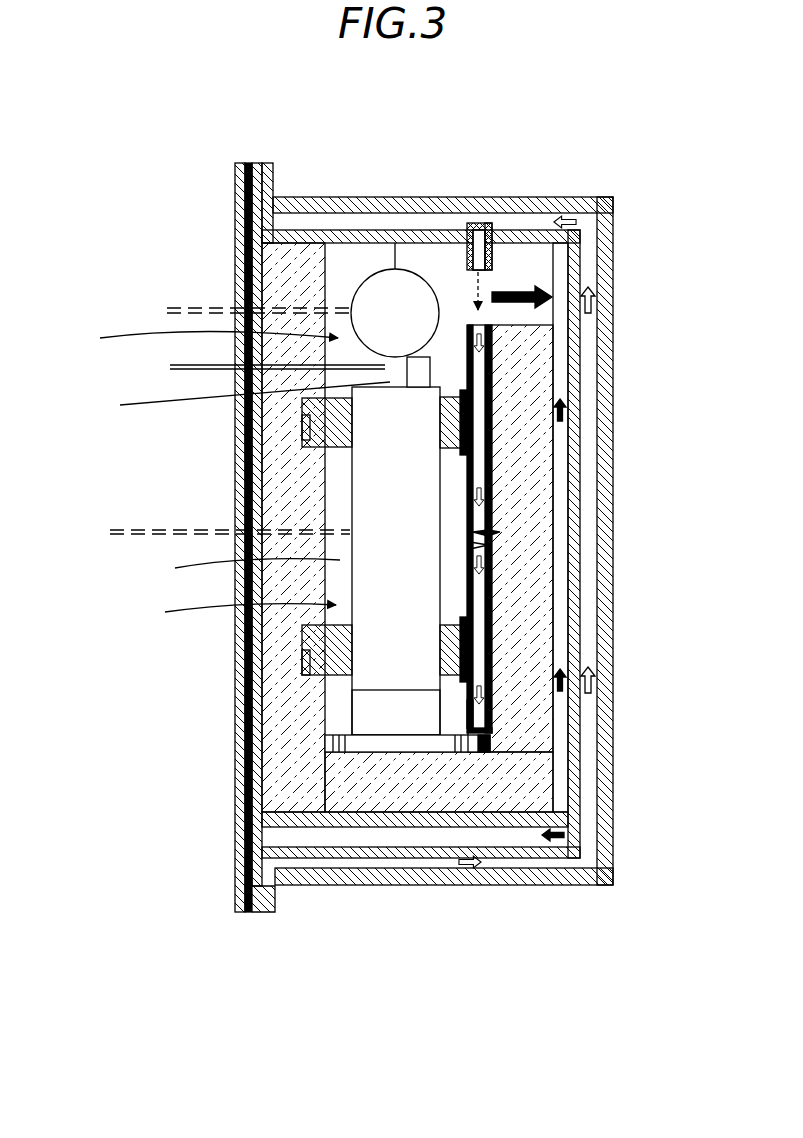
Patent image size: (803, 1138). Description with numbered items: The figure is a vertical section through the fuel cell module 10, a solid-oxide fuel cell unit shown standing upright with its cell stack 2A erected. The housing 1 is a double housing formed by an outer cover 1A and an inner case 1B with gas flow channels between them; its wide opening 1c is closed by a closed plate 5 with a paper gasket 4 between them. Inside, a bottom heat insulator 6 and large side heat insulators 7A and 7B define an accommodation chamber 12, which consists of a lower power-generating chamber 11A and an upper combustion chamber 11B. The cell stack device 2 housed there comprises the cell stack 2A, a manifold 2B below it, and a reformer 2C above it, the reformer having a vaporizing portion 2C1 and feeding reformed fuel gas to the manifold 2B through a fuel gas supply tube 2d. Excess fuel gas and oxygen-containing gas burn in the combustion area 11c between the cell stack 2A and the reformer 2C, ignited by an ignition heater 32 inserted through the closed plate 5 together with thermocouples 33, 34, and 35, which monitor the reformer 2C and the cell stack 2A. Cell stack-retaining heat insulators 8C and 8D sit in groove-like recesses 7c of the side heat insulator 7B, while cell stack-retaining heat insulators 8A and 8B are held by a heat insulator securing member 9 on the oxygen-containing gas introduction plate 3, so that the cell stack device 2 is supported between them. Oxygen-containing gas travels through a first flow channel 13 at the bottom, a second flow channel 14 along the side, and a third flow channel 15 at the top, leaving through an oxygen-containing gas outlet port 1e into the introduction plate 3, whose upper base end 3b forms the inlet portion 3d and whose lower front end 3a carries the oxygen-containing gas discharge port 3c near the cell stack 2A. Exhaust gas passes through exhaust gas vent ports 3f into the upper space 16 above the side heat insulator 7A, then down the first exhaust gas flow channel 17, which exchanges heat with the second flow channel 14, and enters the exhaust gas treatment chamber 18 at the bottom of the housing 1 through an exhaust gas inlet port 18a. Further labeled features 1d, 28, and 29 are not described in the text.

The housing 1 is at (486, 485).
The outer cover 1A is at (268, 163).
The inner case 1B is at (257, 163).
The wide opening 1c is at (285, 250).
The lower wall portion 1d is at (575, 470).
The oxygen-containing gas outlet port 1e is at (478, 240).
The cell stack device 2 is at (305, 419).
The cell stack 2A is at (396, 561).
The manifold 2B is at (396, 706).
The reformer 2C is at (395, 230).
The vaporizing portion 2C1 is at (408, 186).
The fuel gas supply tube 2d is at (430, 375).
The oxygen-containing gas introduction plate 3 is at (438, 446).
The lower front end 3a is at (472, 742).
The upper base end 3b is at (467, 250).
The oxygen-containing gas discharge port 3c is at (468, 714).
The inlet portion 3d is at (481, 225).
The exhaust gas vent port 3f is at (482, 268).
The paper gasket 4 is at (248, 163).
The closed plate 5 is at (240, 163).
The bottom heat insulator 6 is at (439, 782).
The side heat insulator 7A is at (510, 538).
The side heat insulator 7B is at (293, 527).
The groove-like recess 7c is at (300, 425).
The cell stack-retaining heat insulator 8A is at (440, 665).
The cell stack-retaining heat insulator 8B is at (440, 440).
The cell stack-retaining heat insulator 8C is at (351, 643).
The cell stack-retaining heat insulator 8D is at (351, 415).
The heat insulator securing member 9 is at (464, 456).
The fuel cell module 10 is at (603, 194).
The power-generating chamber 11A is at (218, 610).
The combustion chamber 11B is at (185, 333).
The combustion area 11c is at (227, 405).
The accommodation chamber 12 is at (235, 568).
The first flow channel 13 is at (540, 880).
The second flow channel 14 is at (588, 588).
The third flow channel 15 is at (363, 225).
The upper space 16 is at (550, 265).
The first exhaust gas flow channel 17 is at (560, 642).
The exhaust gas treatment chamber 18 is at (300, 855).
The exhaust gas inlet port 18a is at (575, 838).
The sensor 28 is at (492, 532).
The sensor holder 29 is at (492, 545).
The ignition heater 32 is at (165, 367).
The thermocouple 33 is at (205, 291).
The thermocouple 34 is at (150, 310).
The thermocouple 35 is at (211, 530).